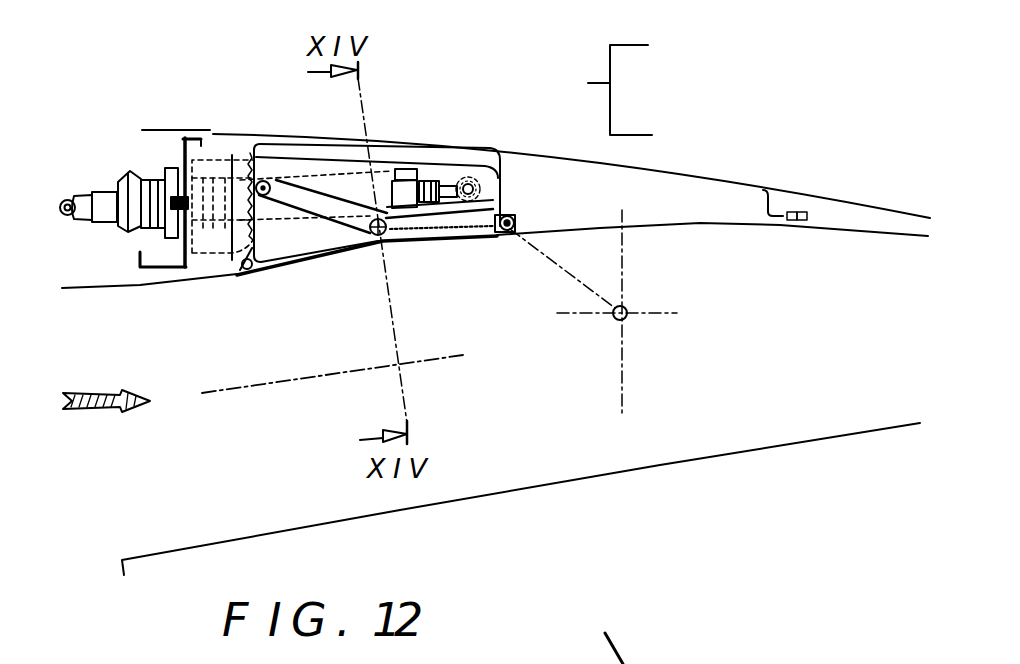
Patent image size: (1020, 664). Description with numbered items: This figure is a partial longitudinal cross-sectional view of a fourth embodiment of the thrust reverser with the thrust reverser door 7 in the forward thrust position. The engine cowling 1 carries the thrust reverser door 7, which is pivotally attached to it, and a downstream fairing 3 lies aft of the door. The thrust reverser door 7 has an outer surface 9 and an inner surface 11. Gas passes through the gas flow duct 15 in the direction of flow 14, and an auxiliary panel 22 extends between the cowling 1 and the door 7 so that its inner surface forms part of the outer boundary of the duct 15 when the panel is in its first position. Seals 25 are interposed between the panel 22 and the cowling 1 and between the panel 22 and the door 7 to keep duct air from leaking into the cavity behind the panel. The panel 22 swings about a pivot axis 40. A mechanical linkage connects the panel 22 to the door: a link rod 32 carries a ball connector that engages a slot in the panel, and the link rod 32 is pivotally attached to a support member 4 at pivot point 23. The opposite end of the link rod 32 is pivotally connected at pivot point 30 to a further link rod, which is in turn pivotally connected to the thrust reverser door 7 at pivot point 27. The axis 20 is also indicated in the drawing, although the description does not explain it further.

The engine cowling 1 is at (158, 130).
The downstream fairing 3 is at (855, 217).
The support member 4 is at (308, 135).
The thrust reverser door 7 is at (532, 177).
The outer surface 9 is at (738, 177).
The inner surface 11 is at (672, 222).
The direction of flow 14 is at (106, 423).
The gas flow duct 15 is at (863, 372).
The pivot axis 20 is at (627, 310).
The auxiliary panel 22 is at (280, 263).
The pivot point 23 is at (376, 236).
The seal 25 is at (240, 273).
The pivot point 27 is at (503, 233).
The pivot point 30 is at (264, 181).
The link rod 32 is at (355, 222).
The pivot axis 40 is at (235, 390).